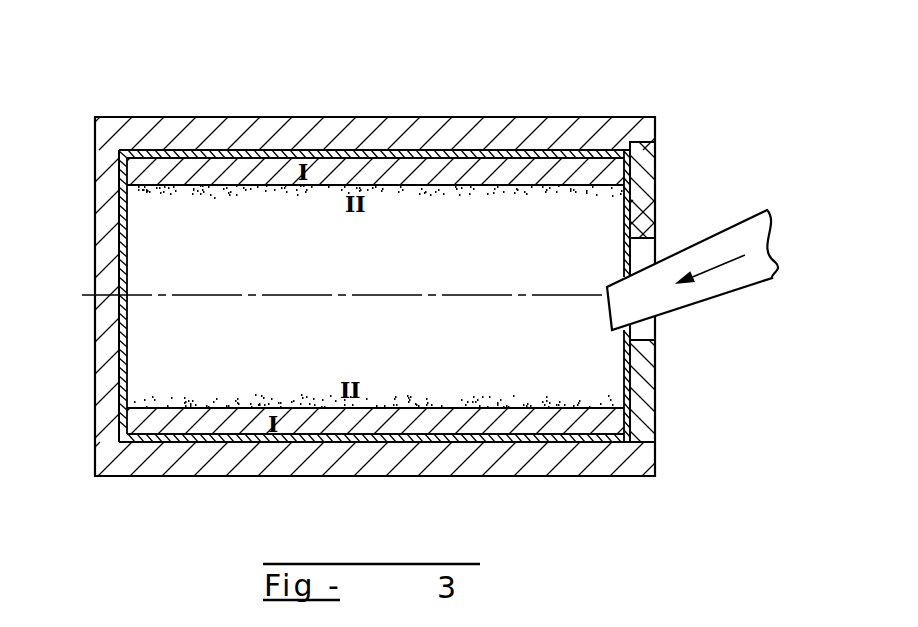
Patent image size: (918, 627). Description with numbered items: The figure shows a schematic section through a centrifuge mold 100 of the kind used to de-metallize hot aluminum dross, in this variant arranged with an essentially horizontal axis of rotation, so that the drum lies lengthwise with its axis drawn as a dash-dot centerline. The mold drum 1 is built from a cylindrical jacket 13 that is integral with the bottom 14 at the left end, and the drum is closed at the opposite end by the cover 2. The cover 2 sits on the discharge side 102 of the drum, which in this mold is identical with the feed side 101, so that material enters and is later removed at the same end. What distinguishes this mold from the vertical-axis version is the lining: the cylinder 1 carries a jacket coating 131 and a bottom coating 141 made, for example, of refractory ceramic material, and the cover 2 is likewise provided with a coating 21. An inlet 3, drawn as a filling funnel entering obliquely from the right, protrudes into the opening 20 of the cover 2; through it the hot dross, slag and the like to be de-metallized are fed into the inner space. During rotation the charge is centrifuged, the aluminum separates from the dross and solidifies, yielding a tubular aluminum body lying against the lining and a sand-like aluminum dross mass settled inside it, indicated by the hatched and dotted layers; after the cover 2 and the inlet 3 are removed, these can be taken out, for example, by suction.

The centrifuge mold 100 is at (341, 114).
The mold drum 1 is at (240, 128).
The jacket 13 is at (473, 457).
The jacket coating 131 is at (553, 437).
The bottom 14 is at (112, 325).
The bottom coating 141 is at (120, 377).
The cover 2 is at (653, 167).
The cover coating 21 is at (653, 208).
The opening 20 is at (643, 329).
The inlet 3 is at (736, 278).
The feed side 101 is at (728, 258).
The discharge side 102 is at (600, 370).